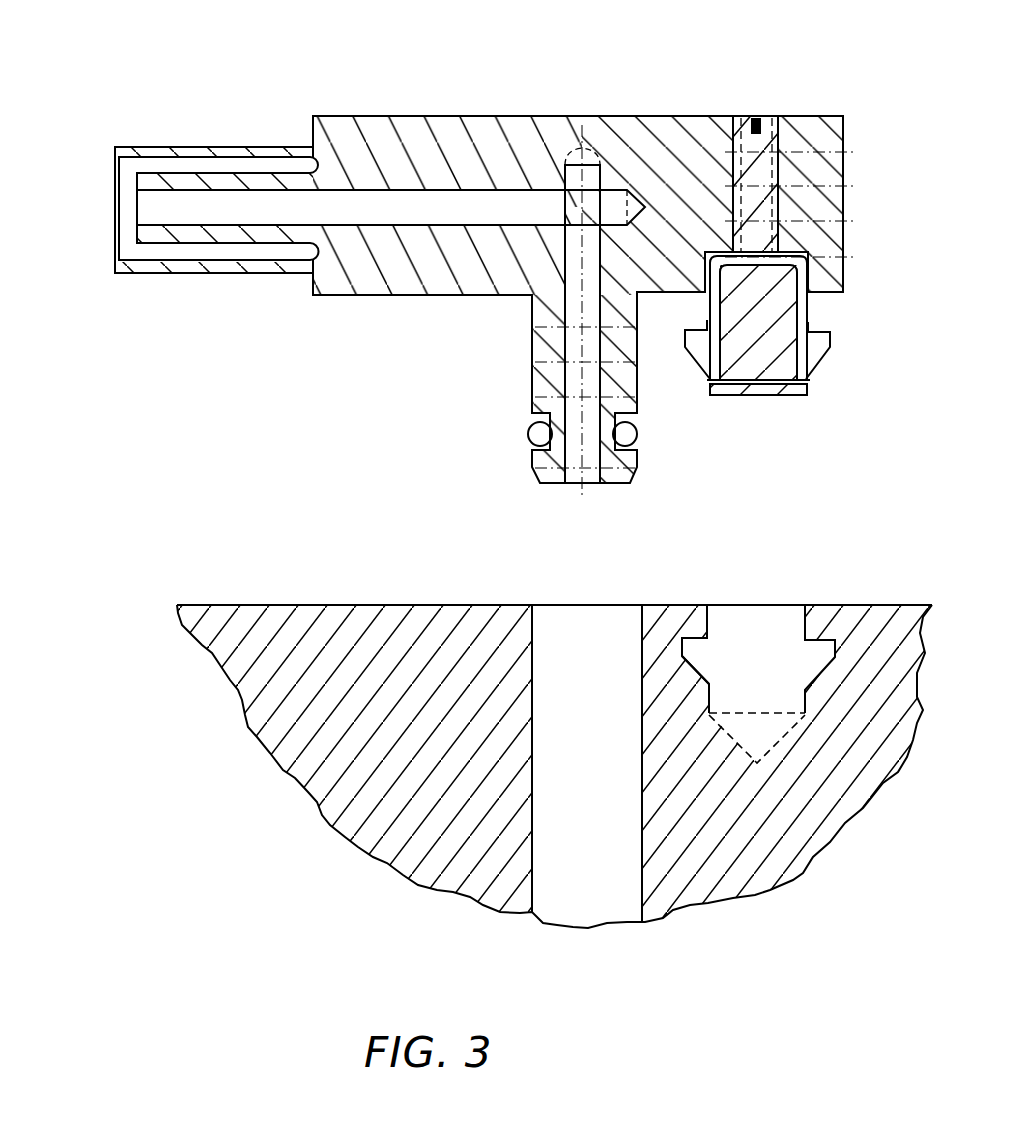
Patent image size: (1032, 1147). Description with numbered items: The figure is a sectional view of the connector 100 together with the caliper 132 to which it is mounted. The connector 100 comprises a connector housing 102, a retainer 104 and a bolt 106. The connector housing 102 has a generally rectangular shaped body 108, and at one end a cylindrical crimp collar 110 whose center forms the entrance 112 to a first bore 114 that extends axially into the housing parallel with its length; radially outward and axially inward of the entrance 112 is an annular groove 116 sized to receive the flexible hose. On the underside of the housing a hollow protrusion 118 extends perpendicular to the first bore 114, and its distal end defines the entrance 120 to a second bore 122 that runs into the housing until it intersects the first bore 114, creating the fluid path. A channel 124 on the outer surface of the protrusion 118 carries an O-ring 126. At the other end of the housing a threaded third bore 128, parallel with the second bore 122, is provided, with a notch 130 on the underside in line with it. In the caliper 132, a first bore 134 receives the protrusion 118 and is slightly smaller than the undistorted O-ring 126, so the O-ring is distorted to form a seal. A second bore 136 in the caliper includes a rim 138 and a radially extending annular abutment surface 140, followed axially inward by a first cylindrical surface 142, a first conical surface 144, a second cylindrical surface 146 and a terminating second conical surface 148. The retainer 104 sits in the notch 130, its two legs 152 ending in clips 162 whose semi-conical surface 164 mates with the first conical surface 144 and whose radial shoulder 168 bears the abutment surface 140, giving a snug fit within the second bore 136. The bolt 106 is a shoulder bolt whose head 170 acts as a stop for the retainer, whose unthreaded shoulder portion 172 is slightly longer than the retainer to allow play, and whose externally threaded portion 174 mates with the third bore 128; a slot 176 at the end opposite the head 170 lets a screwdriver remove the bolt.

The connector 100 is at (488, 75).
The connector housing 102 is at (366, 116).
The retainer 104 is at (782, 342).
The bolt 106 is at (753, 396).
The body 108 is at (636, 116).
The crimp collar 110 is at (238, 147).
The entrance 112 is at (137, 200).
The first bore 114 is at (270, 210).
The annular groove 116 is at (165, 163).
The hollow protrusion 118 is at (530, 352).
The entrance 120 is at (580, 482).
The second bore 122 is at (578, 315).
The channel 124 is at (528, 422).
The O-ring 126 is at (638, 431).
The threaded third bore 128 is at (785, 174).
The notch 130 is at (808, 267).
The caliper 132 is at (393, 606).
The first bore 134 is at (588, 900).
The second bore 136 is at (745, 612).
The rim 138 is at (707, 604).
The annular abutment surface 140 is at (830, 610).
The first cylindrical surface 142 is at (830, 652).
The first conical surface 144 is at (700, 670).
The second cylindrical surface 146 is at (710, 698).
The second conical surface 148 is at (787, 733).
The legs 152 is at (708, 316).
The clip 162 is at (809, 358).
The semi-conical surface 164 is at (694, 360).
The radial shoulder 168 is at (705, 331).
The head 170 is at (809, 389).
The shoulder portion 172 is at (763, 313).
The threaded portion 174 is at (775, 210).
The slot 176 is at (757, 116).